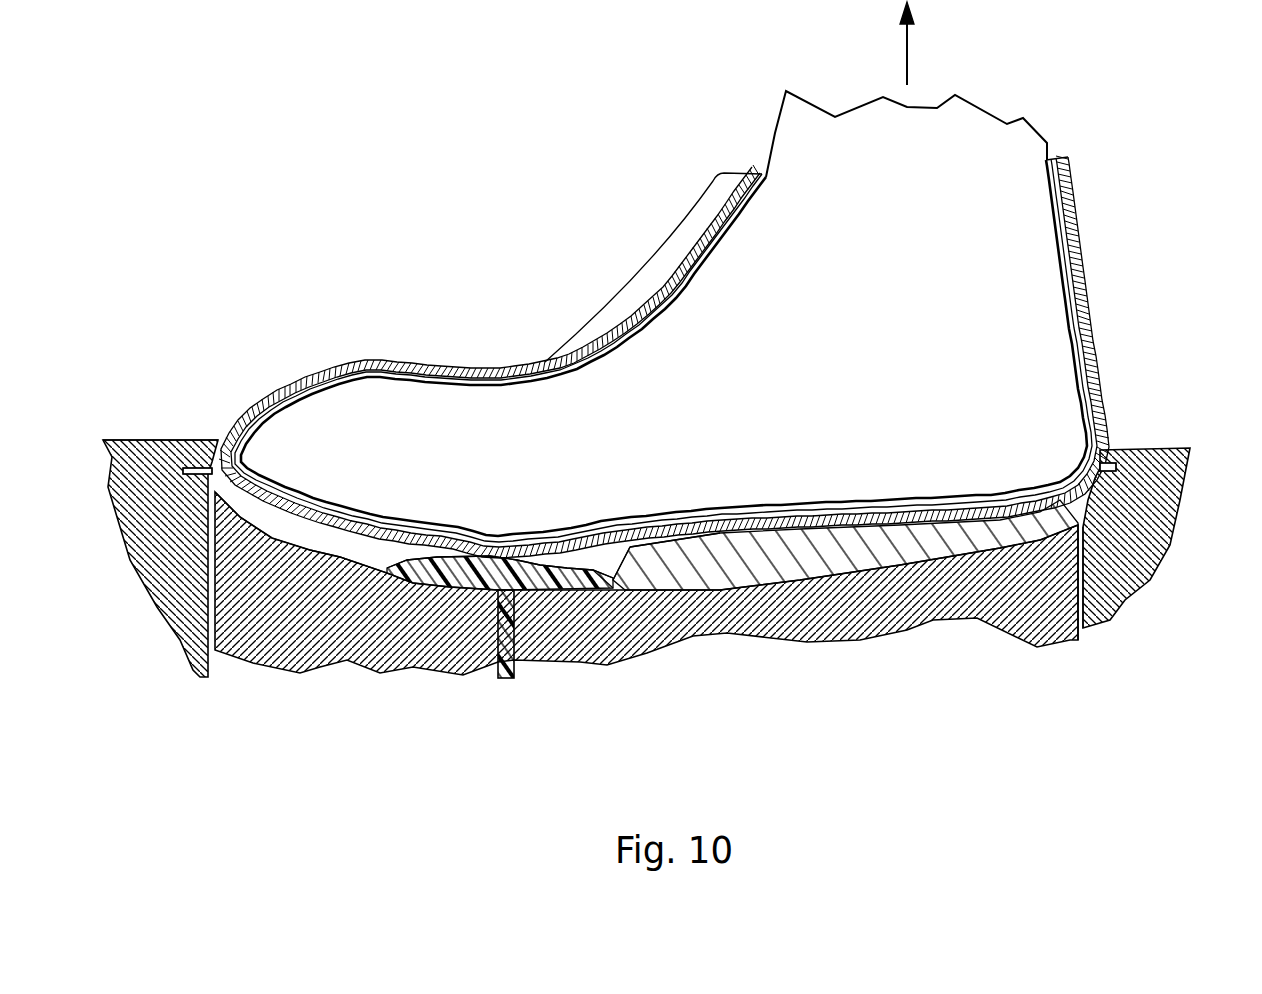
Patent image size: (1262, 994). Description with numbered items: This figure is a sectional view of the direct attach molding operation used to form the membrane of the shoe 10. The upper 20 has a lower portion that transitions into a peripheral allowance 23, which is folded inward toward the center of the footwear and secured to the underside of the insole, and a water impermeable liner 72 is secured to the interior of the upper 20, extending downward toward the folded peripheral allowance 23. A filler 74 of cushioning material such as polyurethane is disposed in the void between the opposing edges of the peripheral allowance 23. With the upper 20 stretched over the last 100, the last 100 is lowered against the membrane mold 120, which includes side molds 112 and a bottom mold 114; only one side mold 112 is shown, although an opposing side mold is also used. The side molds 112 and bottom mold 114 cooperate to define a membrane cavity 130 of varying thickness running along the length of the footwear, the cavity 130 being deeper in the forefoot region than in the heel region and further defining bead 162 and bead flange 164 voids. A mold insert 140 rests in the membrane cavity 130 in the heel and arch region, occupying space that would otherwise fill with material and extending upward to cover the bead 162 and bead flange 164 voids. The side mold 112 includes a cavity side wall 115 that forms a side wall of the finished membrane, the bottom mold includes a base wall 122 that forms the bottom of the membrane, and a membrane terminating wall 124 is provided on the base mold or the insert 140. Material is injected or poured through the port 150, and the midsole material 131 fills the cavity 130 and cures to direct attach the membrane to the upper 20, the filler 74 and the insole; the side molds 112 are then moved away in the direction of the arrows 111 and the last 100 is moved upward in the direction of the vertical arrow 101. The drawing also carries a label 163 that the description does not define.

The shoe 10 is at (572, 292).
The upper 20 is at (288, 378).
The peripheral allowance 23 is at (258, 493).
The water impermeable liner 72 is at (325, 372).
The filler 74 is at (767, 517).
The last 100 is at (812, 150).
The vertical arrow 101 is at (927, 44).
The arrows 111 is at (147, 463).
The side mold 112 is at (128, 482).
The bottom mold 114 is at (270, 625).
The cavity side wall 115 is at (600, 568).
The membrane mold 120 is at (142, 425).
The base wall 122 is at (610, 583).
The membrane terminating wall 124 is at (625, 580).
The membrane cavity 130 is at (352, 555).
The midsole material 131 is at (453, 575).
The mold insert 140 is at (798, 555).
The port 150 is at (500, 672).
The bead 162 is at (190, 478).
The layer boundary 163 is at (660, 547).
The bead flange 164 is at (198, 488).